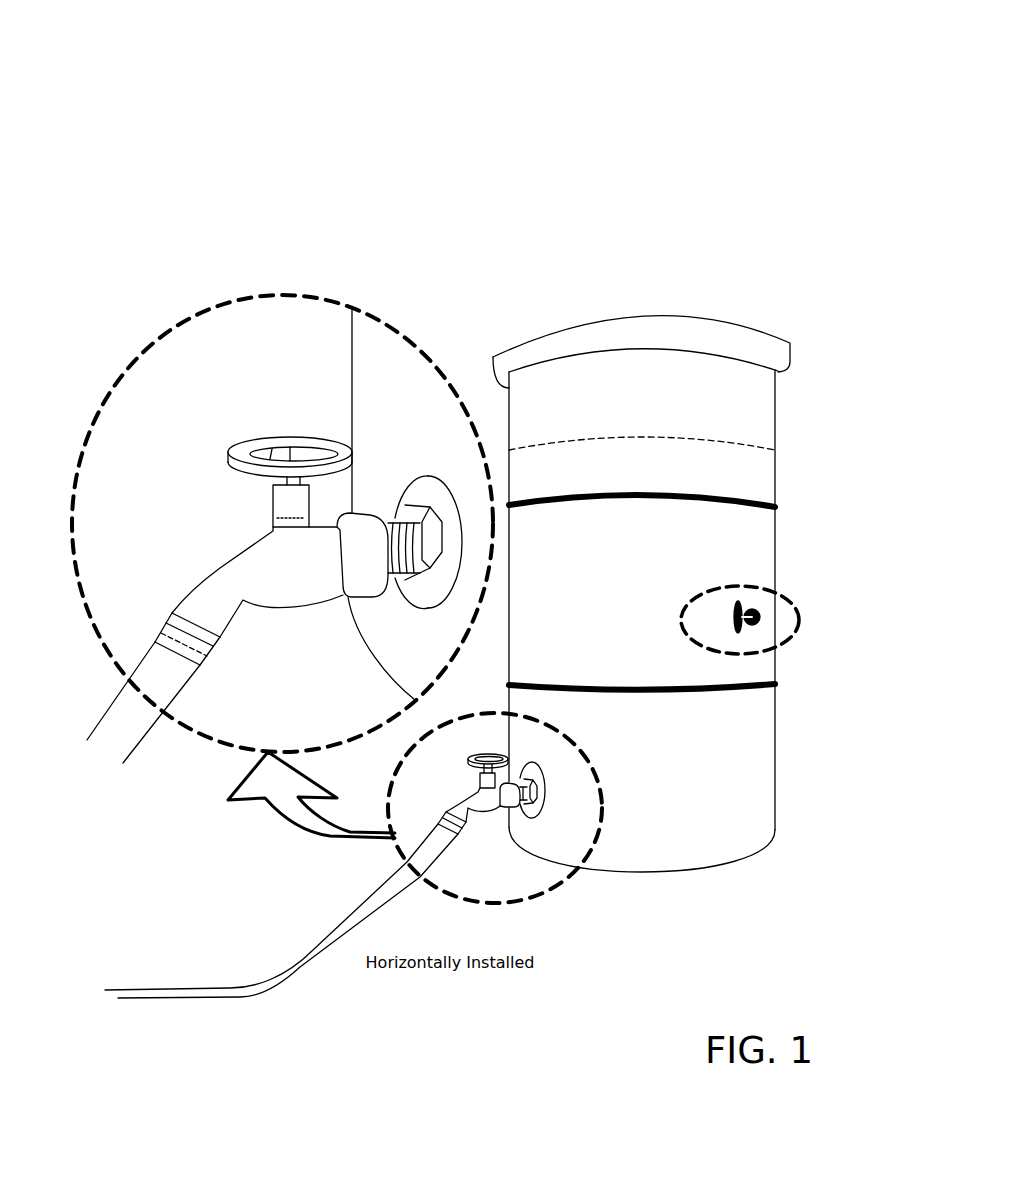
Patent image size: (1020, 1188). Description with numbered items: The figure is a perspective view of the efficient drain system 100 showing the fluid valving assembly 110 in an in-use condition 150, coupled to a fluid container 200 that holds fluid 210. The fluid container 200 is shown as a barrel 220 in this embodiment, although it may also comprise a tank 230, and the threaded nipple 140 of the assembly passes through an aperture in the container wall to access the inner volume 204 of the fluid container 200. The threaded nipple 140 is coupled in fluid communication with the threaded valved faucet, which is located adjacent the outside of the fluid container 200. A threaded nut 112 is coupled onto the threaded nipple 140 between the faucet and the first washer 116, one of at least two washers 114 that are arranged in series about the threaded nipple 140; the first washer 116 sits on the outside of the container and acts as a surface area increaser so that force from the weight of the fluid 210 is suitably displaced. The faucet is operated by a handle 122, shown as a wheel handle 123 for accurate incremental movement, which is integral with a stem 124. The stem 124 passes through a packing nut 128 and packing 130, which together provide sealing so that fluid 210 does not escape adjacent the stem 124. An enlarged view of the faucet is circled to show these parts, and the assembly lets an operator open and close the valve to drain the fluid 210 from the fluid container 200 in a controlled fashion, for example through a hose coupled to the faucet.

The efficient drain system 100 is at (667, 85).
The in-use condition 150 is at (667, 151).
The fluid container 200 is at (698, 316).
The inner volume 204 is at (753, 558).
The fluid 210 is at (742, 441).
The barrel 220 is at (594, 615).
The tank 230 is at (693, 752).
The fluid valving assembly 110 is at (318, 620).
The threaded nut 112 is at (426, 587).
The washers 114 is at (544, 812).
The first washer 116 is at (392, 494).
The handle 122 is at (261, 435).
The wheel handle 123 is at (316, 435).
The stem 124 is at (281, 481).
The packing nut 128 is at (384, 636).
The packing 130 is at (273, 524).
The threaded nipple 140 is at (394, 531).